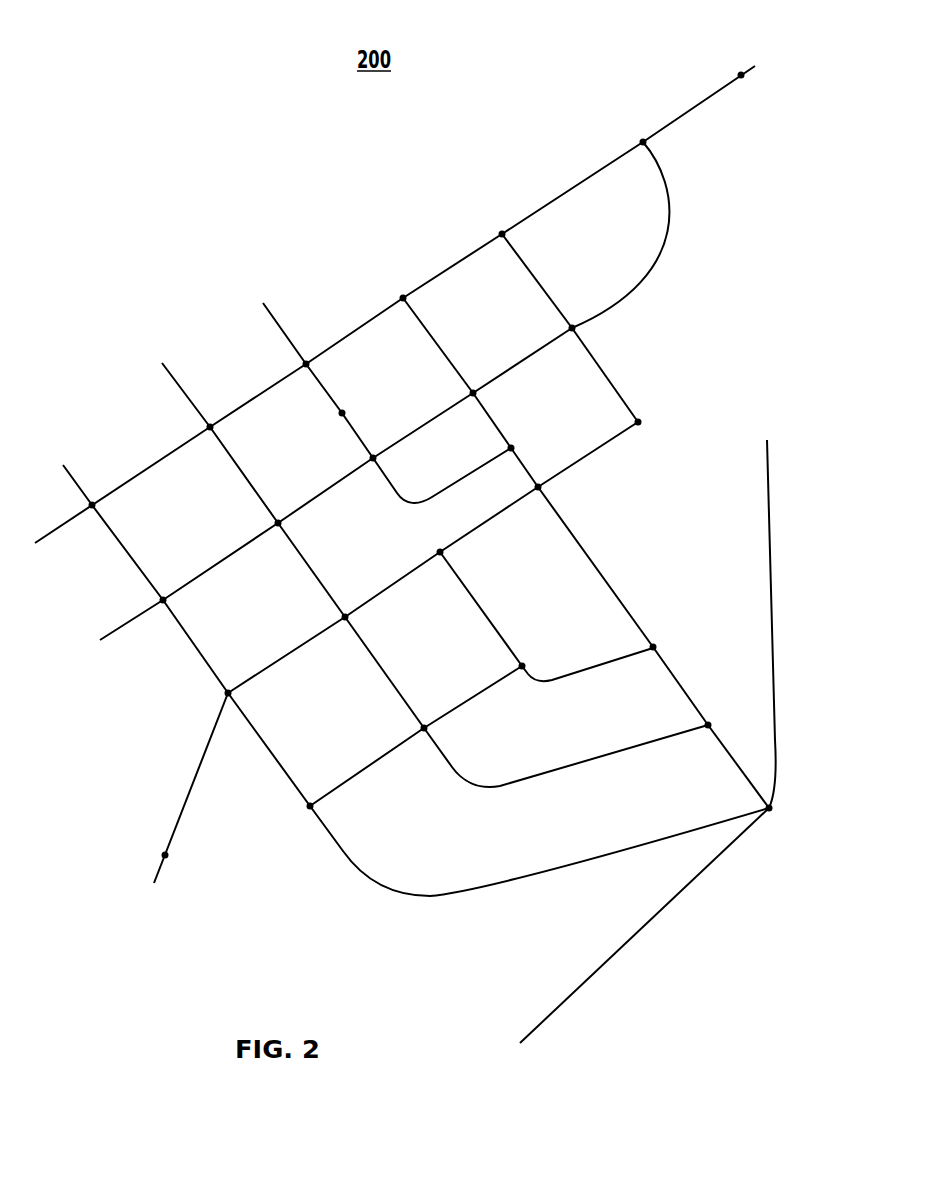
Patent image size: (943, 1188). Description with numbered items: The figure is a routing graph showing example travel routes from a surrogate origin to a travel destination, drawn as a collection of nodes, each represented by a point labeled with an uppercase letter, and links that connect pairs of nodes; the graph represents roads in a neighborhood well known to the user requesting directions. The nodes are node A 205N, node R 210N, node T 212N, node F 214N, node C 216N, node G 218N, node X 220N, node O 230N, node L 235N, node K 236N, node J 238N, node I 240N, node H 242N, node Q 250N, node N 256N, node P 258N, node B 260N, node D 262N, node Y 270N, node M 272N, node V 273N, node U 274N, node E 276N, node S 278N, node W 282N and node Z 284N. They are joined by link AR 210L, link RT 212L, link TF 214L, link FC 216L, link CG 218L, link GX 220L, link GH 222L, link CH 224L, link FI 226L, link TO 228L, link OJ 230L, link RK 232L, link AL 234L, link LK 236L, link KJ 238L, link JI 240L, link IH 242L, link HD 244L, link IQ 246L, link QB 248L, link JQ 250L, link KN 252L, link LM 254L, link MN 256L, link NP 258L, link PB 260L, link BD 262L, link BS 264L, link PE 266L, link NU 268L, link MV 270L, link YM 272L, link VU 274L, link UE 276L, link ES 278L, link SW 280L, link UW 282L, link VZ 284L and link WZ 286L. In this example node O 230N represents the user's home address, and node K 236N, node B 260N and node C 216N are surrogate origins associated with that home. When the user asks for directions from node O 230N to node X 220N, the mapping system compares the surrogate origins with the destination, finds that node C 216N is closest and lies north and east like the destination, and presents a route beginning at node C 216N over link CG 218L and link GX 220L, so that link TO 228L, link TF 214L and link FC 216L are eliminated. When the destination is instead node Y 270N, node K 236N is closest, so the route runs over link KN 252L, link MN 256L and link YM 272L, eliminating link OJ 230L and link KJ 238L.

The node A 205N is at (92, 505).
The node R 210N is at (210, 427).
The node T 212N is at (306, 364).
The node F 214N is at (403, 298).
The node C 216N is at (502, 234).
The node G 218N is at (643, 142).
The node X 220N is at (741, 75).
The node O 230N is at (342, 413).
The node L 235N is at (163, 600).
The node K 236N is at (278, 523).
The node J 238N is at (373, 458).
The node I 240N is at (473, 393).
The node H 242N is at (572, 328).
The node Q 250N is at (511, 448).
The node N 256N is at (345, 617).
The node P 258N is at (440, 552).
The node B 260N is at (538, 487).
The node D 262N is at (638, 422).
The node Y 270N is at (165, 855).
The node M 272N is at (228, 693).
The node V 273N is at (310, 806).
The node U 274N is at (424, 728).
The node E 276N is at (522, 666).
The node S 278N is at (653, 647).
The node W 282N is at (708, 725).
The node Z 284N is at (769, 808).
The link AR 210L is at (160, 460).
The link RT 212L is at (268, 385).
The link TF 214L is at (365, 325).
The link FC 216L is at (462, 260).
The link CG 218L is at (570, 191).
The link GX 220L is at (700, 104).
The link GH 222L is at (670, 202).
The link CH 224L is at (527, 265).
The link FI 226L is at (436, 332).
The link TO 228L is at (318, 381).
The link OJ 230L is at (356, 432).
The link RK 232L is at (228, 454).
The link AL 234L is at (125, 548).
The link LK 236L is at (203, 574).
The link KJ 238L is at (316, 497).
The link JI 240L is at (389, 451).
The link IH 242L is at (512, 366).
The link HD 244L is at (612, 384).
The link IQ 246L is at (497, 428).
The link QB 248L is at (523, 465).
The link JQ 250L is at (445, 490).
The link KN 252L is at (313, 572).
The link LM 254L is at (190, 638).
The link MN 256L is at (265, 668).
The link NP 258L is at (367, 603).
The link PB 260L is at (470, 532).
The link BD 262L is at (585, 457).
The link BS 264L is at (605, 580).
The link PE 266L is at (500, 635).
The link NU 268L is at (390, 680).
The link MV 270L is at (272, 753).
The link YM 272L is at (185, 800).
The link VU 274L is at (345, 782).
The link UE 276L is at (448, 713).
The link ES 278L is at (580, 669).
The link SW 280L is at (680, 685).
The link UW 282L is at (570, 768).
The link VZ 284L is at (500, 882).
The link WZ 286L is at (747, 778).